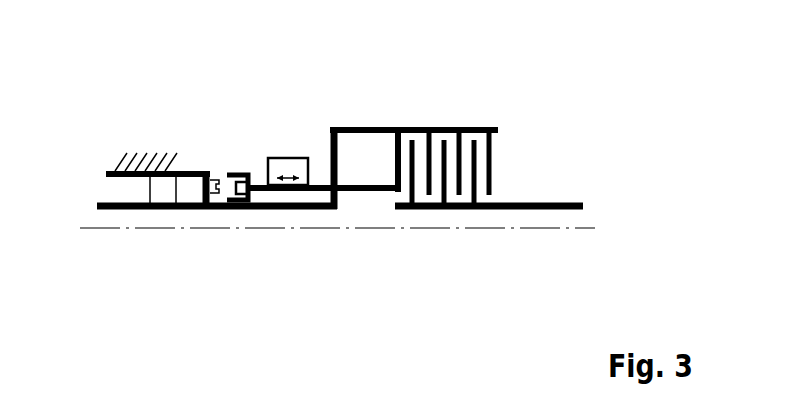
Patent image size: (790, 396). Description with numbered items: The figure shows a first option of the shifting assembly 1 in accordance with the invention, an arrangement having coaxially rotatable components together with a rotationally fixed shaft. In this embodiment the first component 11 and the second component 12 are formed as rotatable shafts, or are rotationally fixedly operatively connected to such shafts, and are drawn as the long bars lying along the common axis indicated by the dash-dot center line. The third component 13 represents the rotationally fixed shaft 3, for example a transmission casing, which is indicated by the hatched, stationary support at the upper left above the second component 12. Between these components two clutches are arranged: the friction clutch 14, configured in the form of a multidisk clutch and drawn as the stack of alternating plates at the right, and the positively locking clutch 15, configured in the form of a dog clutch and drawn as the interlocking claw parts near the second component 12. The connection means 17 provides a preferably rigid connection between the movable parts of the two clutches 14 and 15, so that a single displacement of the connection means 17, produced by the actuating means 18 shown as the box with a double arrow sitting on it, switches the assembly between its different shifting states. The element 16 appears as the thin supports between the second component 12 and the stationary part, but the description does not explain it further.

The shifting assembly 1 is at (259, 126).
The rotationally fixed shaft 3 is at (133, 160).
The third component 13 is at (132, 124).
The positively locking clutch 15 is at (217, 165).
The bearing 16 is at (153, 206).
The second component 12 is at (265, 206).
The connection means 17 is at (367, 192).
The actuating means 18 is at (301, 156).
The friction clutch 14 is at (449, 159).
The first component 11 is at (523, 210).